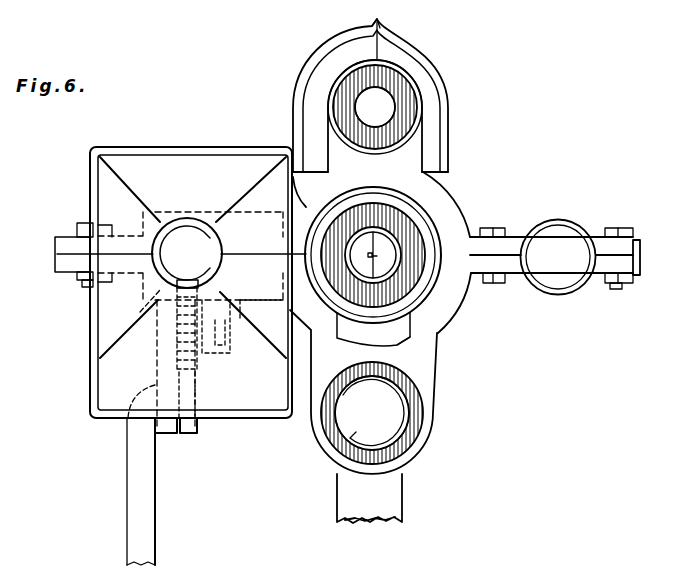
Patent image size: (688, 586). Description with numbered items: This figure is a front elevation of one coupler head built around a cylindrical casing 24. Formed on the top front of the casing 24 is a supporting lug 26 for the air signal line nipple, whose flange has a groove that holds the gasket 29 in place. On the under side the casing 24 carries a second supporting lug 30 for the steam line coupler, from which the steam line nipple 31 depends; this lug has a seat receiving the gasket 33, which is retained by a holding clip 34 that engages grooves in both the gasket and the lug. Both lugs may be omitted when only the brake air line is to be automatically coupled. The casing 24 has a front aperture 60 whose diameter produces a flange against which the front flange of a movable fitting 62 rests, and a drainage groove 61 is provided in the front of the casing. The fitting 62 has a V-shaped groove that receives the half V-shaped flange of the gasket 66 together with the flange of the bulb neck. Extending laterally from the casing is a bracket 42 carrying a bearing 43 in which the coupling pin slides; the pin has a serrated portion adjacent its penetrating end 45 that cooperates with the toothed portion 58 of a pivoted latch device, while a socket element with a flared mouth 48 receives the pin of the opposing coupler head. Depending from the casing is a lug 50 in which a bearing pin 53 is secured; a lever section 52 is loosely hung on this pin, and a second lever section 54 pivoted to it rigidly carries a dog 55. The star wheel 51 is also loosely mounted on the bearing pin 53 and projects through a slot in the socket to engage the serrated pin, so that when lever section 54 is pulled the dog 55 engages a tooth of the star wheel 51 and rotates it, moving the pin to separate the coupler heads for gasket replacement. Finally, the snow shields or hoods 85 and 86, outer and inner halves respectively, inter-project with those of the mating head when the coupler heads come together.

The casing 24 is at (452, 213).
The supporting lug 26 is at (412, 80).
The gasket 29 is at (378, 108).
The supporting lug 30 is at (434, 392).
The steam line nipple 31 is at (346, 492).
The gasket 33 is at (408, 437).
The holding clip 34 is at (353, 430).
The bracket 42 is at (500, 240).
The bearing 43 is at (587, 224).
The penetrating end 45 is at (560, 282).
The flared mouth 48 is at (107, 303).
The lug 50 is at (238, 312).
The star wheel 51 is at (175, 294).
The lever section 52 is at (170, 433).
The bearing pin 53 is at (221, 350).
The lever section 54 is at (130, 495).
The dog 55 is at (198, 432).
The toothed portion 58 is at (214, 256).
The front aperture 60 is at (403, 189).
The drainage groove 61 is at (397, 345).
The movable fitting 62 is at (420, 288).
The gasket 66 is at (408, 228).
The snow shield 85 is at (313, 58).
The snow shield 86 is at (415, 52).